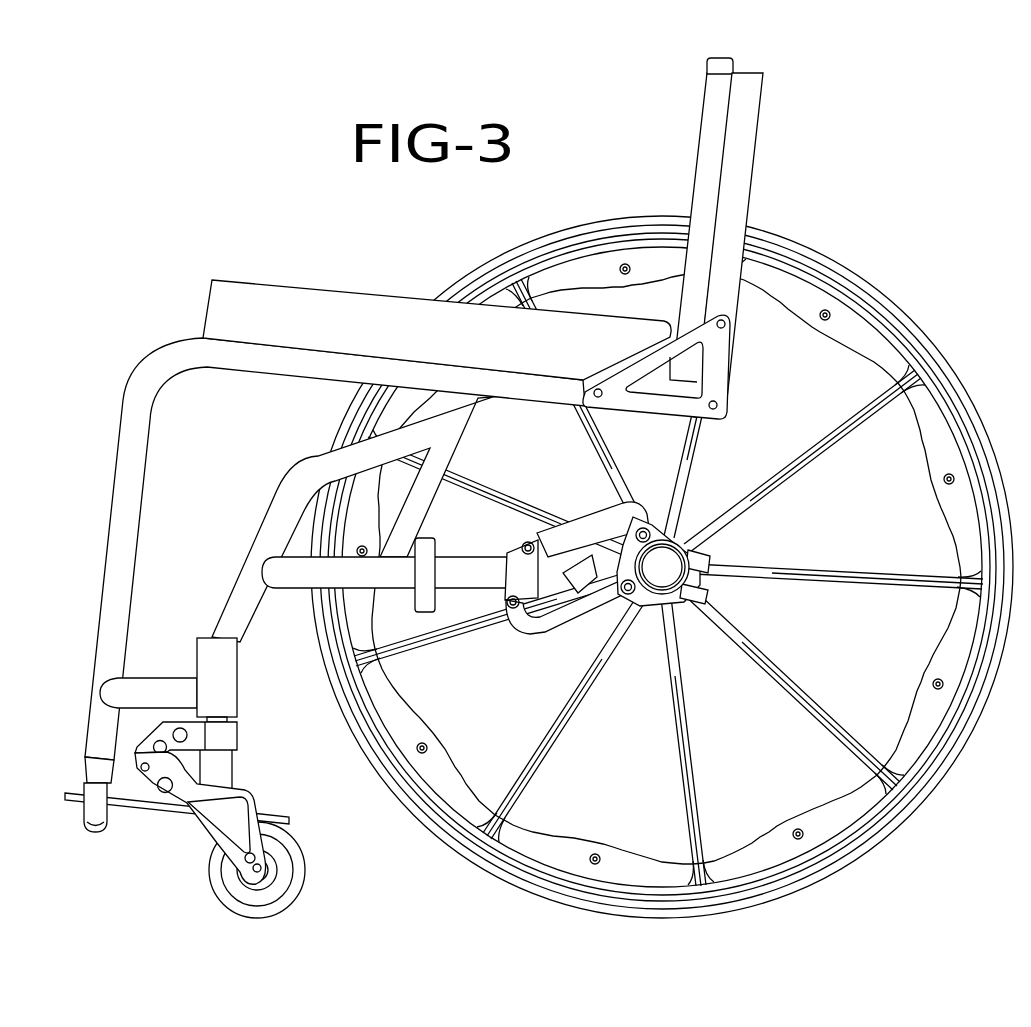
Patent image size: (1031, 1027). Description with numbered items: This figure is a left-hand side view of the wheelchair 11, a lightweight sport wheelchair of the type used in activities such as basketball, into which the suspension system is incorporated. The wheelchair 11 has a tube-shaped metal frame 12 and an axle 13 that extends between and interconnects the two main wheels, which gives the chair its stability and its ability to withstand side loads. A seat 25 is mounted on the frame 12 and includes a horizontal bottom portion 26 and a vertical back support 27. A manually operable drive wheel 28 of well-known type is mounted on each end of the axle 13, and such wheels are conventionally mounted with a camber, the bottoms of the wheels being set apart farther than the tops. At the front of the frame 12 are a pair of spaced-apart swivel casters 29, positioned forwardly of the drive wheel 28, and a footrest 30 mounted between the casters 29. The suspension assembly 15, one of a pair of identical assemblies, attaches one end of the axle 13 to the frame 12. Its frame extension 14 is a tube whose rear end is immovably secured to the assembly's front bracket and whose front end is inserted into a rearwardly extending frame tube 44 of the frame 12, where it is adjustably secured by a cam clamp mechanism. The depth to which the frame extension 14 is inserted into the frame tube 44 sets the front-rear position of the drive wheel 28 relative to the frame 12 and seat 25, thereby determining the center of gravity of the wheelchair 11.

The wheelchair 11 is at (756, 164).
The frame 12 is at (300, 588).
The axle 13 is at (662, 578).
The frame extension 14 is at (475, 560).
The suspension assembly 15 is at (561, 624).
The seat 25 is at (697, 140).
The horizontal bottom portion 26 is at (255, 295).
The vertical back support 27 is at (713, 103).
The drive wheel 28 is at (865, 282).
The swivel caster 29 is at (303, 866).
The footrest 30 is at (148, 810).
The frame tube 44 is at (307, 568).